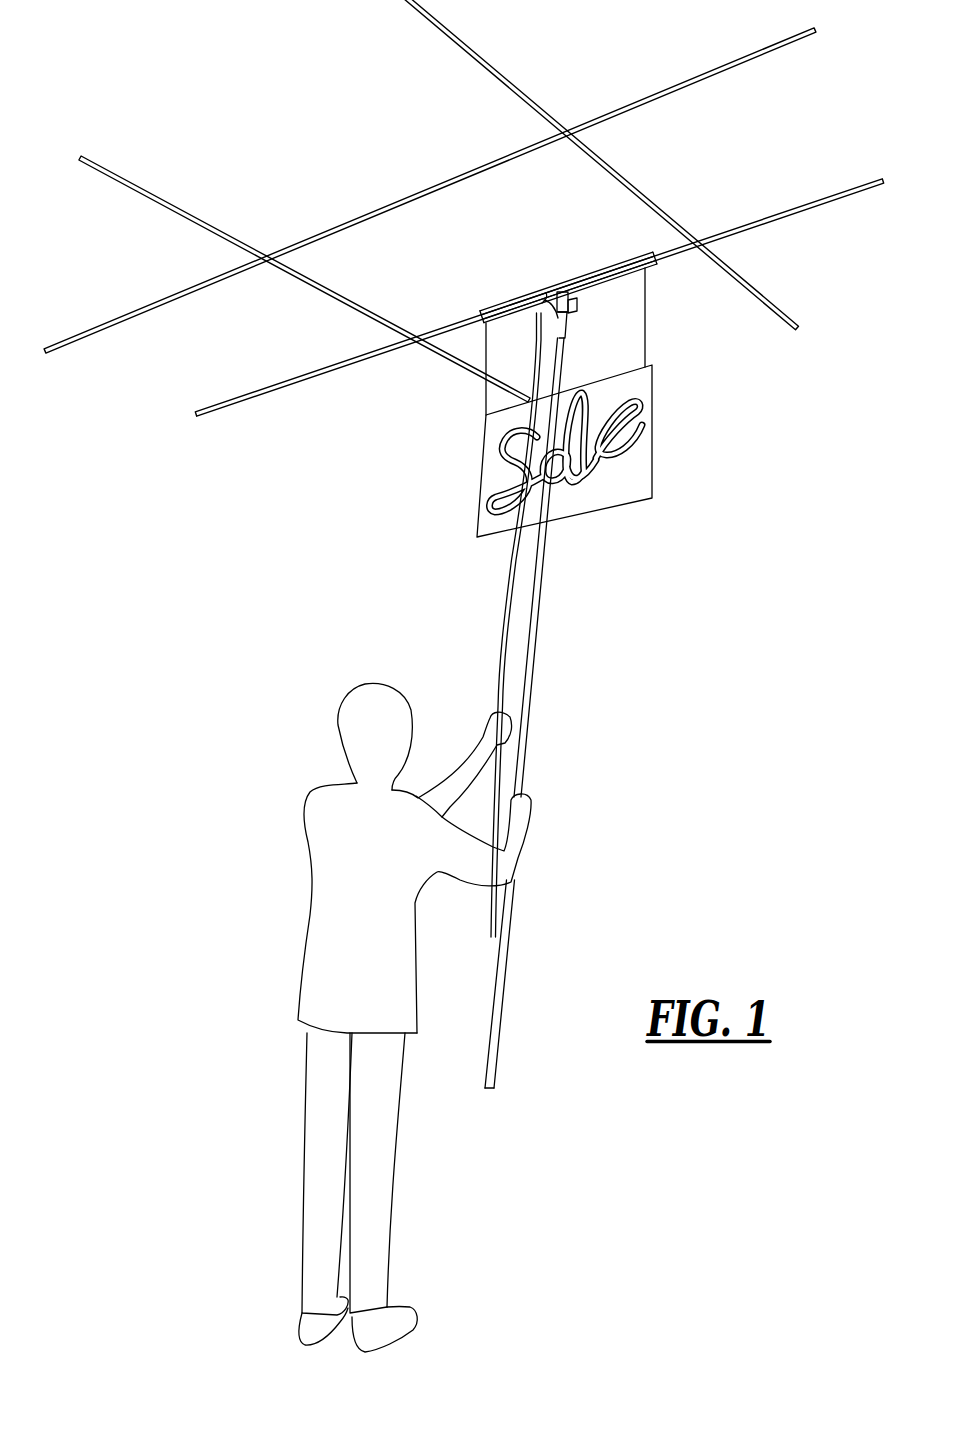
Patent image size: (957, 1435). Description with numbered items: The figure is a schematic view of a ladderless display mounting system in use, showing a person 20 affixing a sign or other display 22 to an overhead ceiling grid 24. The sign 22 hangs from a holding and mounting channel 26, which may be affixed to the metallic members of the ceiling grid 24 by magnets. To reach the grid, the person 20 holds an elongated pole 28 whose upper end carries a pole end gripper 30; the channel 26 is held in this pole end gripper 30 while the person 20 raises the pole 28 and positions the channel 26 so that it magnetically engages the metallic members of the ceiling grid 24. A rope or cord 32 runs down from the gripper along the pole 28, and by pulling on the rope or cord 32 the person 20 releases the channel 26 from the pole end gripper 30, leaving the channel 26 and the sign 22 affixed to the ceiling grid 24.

The person 20 is at (342, 917).
The sign 22 is at (643, 476).
The ceiling grid 24 is at (767, 214).
The holding and mounting channel 26 is at (598, 272).
The pole 28 is at (531, 668).
The pole end gripper 30 is at (547, 295).
The rope or cord 32 is at (510, 573).